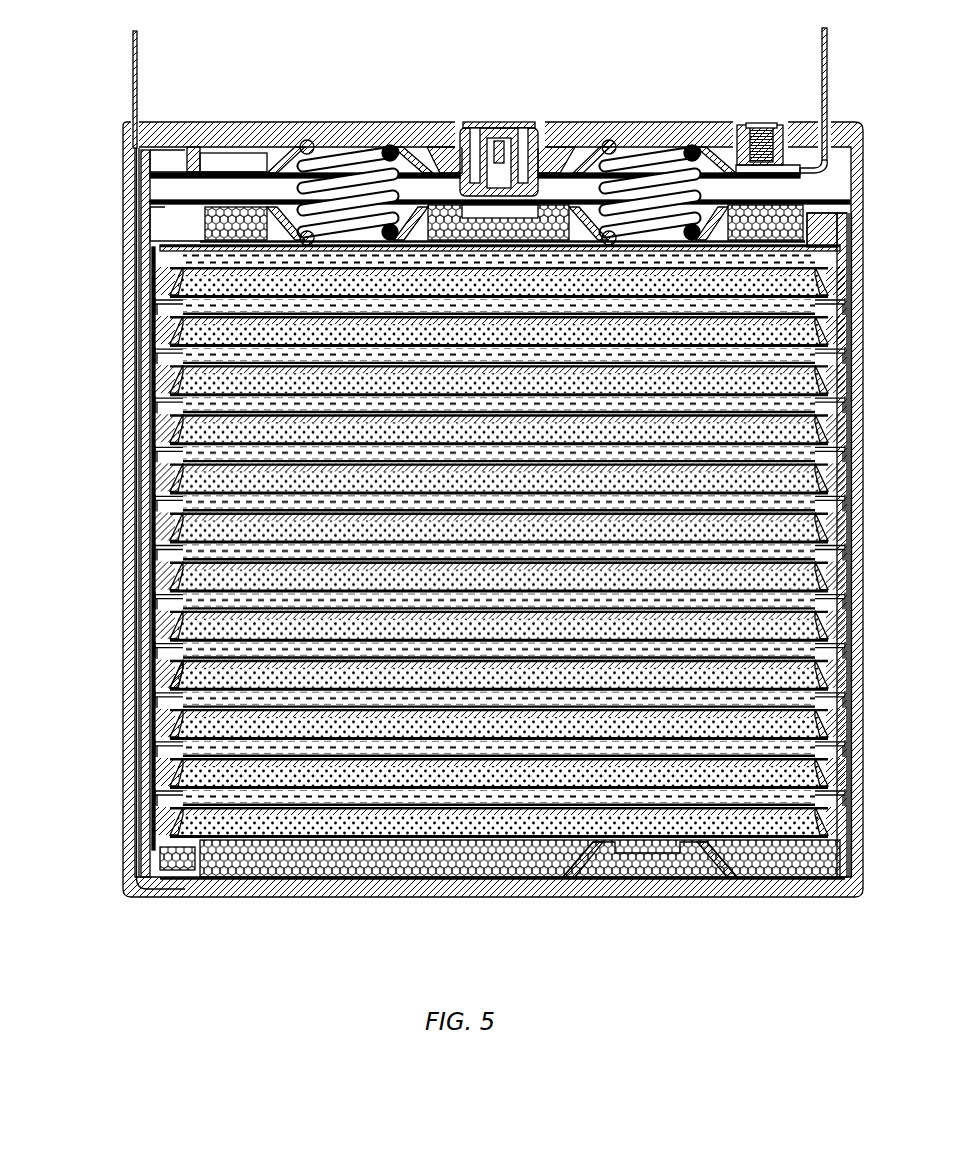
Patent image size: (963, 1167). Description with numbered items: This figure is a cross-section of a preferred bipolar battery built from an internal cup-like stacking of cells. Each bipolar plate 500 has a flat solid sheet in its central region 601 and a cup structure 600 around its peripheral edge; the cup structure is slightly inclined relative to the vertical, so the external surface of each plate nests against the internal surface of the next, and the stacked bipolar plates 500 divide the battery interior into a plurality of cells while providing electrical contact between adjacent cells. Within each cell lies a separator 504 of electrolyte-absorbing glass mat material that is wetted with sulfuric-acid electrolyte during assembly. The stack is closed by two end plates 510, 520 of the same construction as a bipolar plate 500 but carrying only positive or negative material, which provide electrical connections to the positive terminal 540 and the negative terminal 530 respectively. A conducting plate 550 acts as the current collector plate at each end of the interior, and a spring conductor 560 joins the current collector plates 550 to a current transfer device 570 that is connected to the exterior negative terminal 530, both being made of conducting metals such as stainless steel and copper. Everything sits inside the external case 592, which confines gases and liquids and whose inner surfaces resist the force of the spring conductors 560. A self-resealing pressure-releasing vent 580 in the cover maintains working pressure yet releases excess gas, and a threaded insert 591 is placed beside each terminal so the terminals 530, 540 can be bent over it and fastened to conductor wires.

The bipolar plate 500 is at (173, 510).
The separator 504 is at (177, 427).
The end plate 510 is at (122, 283).
The end plate 520 is at (260, 838).
The negative terminal 530 is at (822, 98).
The positive terminal 540 is at (138, 98).
The conducting plate 550 is at (233, 203).
The spring conductor 560 is at (343, 180).
The current transfer device 570 is at (440, 157).
The pressure-releasing vent 580 is at (503, 160).
The threaded insert 591 is at (760, 122).
The external case 592 is at (128, 783).
The cup structure 600 is at (167, 667).
The central region 601 is at (203, 688).